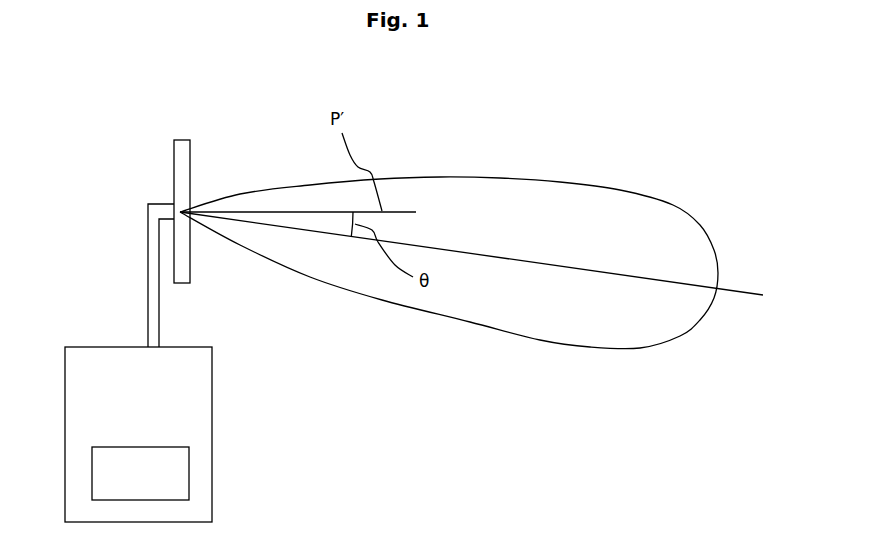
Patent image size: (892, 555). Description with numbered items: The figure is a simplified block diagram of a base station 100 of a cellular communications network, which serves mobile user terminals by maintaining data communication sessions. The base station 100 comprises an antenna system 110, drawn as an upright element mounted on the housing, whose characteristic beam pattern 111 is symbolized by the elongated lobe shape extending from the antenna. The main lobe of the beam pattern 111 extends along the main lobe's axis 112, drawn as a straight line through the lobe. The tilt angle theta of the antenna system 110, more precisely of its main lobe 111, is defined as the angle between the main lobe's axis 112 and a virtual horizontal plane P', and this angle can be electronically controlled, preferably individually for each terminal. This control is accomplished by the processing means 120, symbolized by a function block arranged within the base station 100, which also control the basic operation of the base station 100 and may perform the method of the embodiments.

The base station 100 is at (213, 398).
The antenna system 110 is at (182, 158).
The beam pattern 111 is at (673, 203).
The main lobe's axis 112 is at (497, 258).
The processing means 120 is at (190, 465).